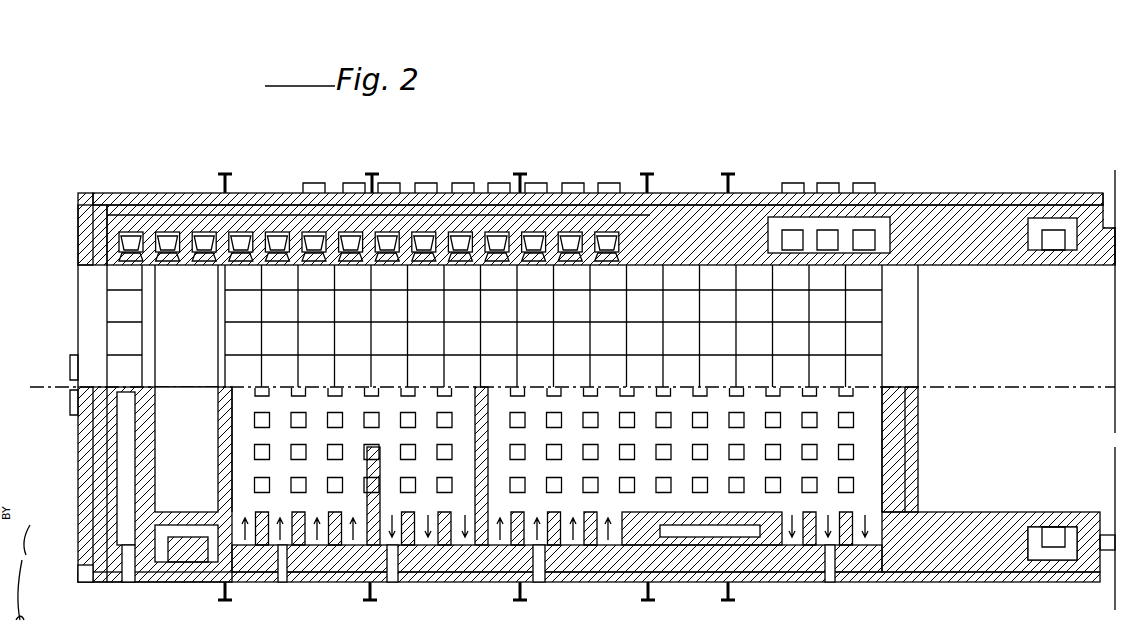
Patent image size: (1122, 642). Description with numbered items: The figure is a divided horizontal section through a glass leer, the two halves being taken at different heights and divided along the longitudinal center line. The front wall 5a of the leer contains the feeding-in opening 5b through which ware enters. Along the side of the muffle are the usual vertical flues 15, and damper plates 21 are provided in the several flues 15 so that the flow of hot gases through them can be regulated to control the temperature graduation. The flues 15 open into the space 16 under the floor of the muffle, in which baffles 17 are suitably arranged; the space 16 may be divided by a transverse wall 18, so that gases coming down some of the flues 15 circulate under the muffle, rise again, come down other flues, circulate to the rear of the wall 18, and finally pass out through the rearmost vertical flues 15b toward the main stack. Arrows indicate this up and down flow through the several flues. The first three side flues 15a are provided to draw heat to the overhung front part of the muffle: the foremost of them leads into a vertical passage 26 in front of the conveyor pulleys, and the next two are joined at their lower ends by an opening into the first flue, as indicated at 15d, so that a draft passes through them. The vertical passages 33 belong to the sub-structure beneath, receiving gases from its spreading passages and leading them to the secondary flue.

The front wall 5a is at (78, 433).
The feeding-in opening 5b is at (573, 390).
The vertical flues 15 is at (247, 243).
The first three side flues 15a is at (205, 240).
The rearmost vertical flues 15b is at (792, 250).
The opening joining flues 15d is at (163, 262).
The space under the floor of the muffle 16 is at (557, 449).
The baffles 17 is at (442, 390).
The transverse wall 18 is at (488, 407).
The damper plates 21 is at (353, 183).
The vertical passage 26 is at (127, 458).
The vertical passages 33 is at (1048, 240).